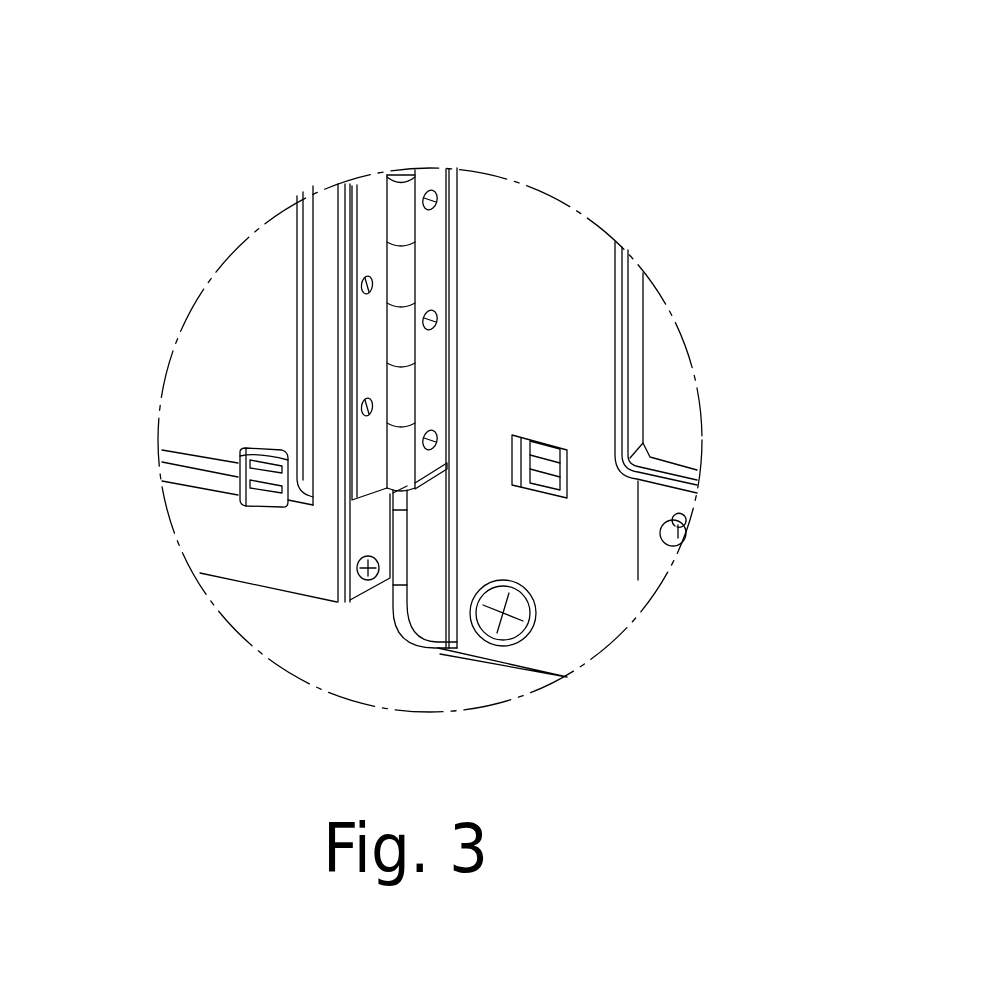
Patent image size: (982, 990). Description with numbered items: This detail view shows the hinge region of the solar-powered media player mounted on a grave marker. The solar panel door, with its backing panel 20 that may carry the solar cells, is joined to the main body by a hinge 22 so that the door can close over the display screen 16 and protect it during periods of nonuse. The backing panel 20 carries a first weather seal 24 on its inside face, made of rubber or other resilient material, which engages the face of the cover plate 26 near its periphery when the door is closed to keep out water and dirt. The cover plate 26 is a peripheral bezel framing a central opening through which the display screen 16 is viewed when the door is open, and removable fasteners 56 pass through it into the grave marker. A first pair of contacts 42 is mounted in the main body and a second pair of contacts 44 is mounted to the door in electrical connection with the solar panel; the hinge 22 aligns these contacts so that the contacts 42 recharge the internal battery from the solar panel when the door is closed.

The display screen 16 is at (675, 368).
The backing panel 20 is at (233, 298).
The hinge 22 is at (400, 178).
The first weather seal 24 is at (247, 570).
The cover plate 26 is at (532, 220).
The first pair of contacts 42 is at (562, 498).
The second pair of contacts 44 is at (240, 497).
The removable fasteners 56 is at (527, 630).